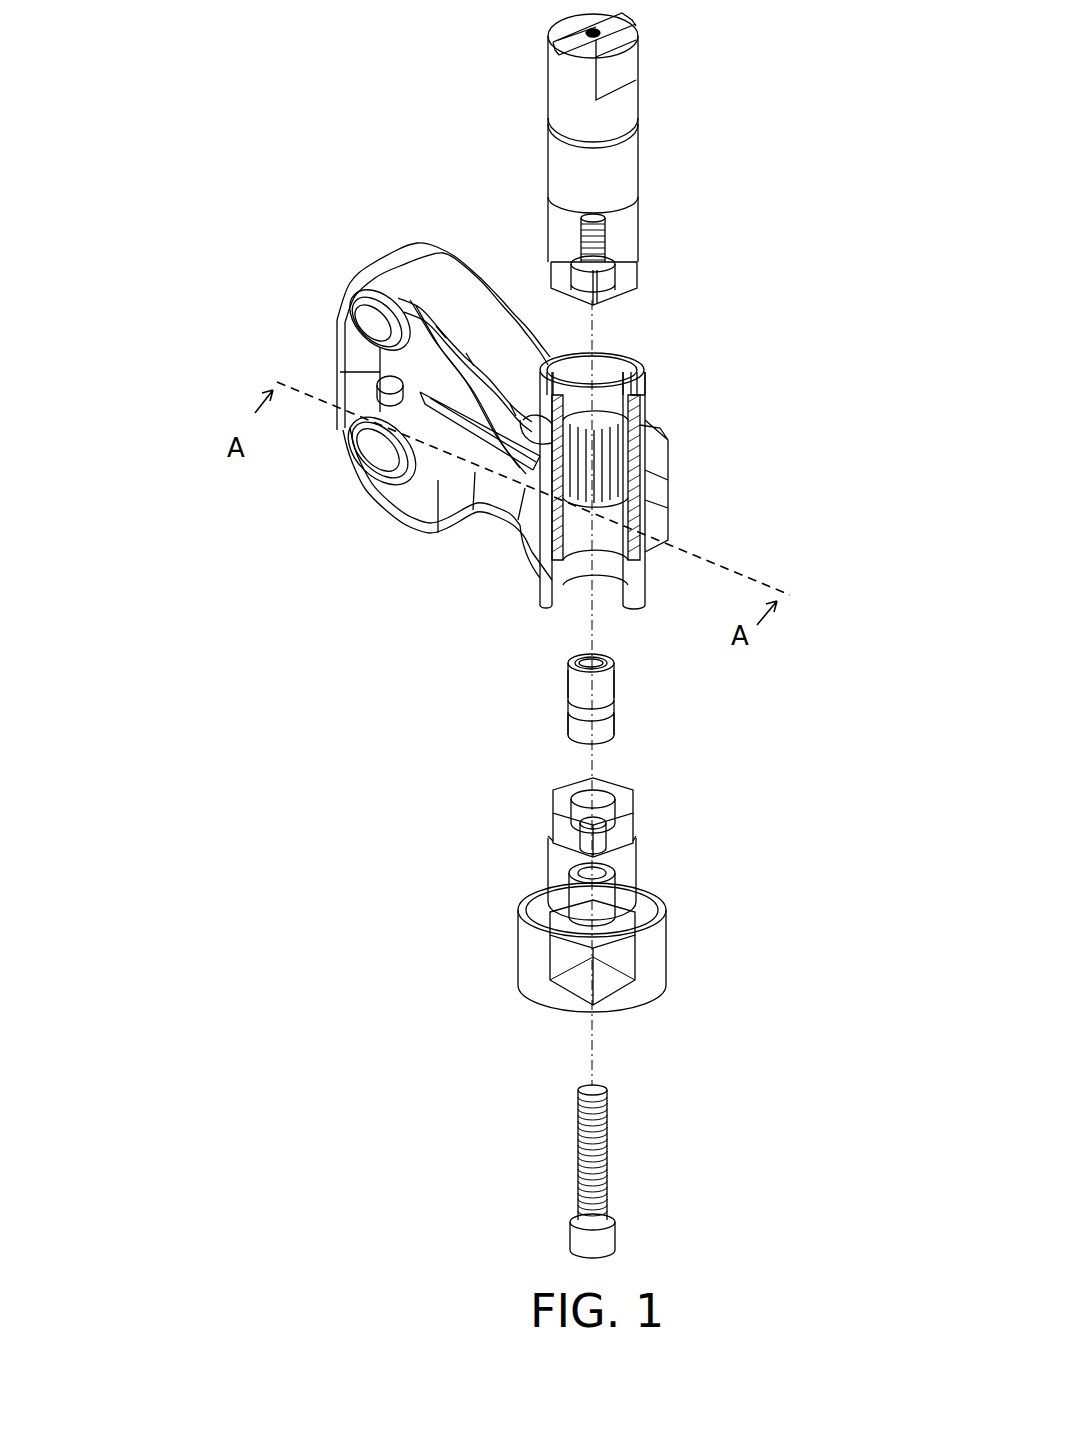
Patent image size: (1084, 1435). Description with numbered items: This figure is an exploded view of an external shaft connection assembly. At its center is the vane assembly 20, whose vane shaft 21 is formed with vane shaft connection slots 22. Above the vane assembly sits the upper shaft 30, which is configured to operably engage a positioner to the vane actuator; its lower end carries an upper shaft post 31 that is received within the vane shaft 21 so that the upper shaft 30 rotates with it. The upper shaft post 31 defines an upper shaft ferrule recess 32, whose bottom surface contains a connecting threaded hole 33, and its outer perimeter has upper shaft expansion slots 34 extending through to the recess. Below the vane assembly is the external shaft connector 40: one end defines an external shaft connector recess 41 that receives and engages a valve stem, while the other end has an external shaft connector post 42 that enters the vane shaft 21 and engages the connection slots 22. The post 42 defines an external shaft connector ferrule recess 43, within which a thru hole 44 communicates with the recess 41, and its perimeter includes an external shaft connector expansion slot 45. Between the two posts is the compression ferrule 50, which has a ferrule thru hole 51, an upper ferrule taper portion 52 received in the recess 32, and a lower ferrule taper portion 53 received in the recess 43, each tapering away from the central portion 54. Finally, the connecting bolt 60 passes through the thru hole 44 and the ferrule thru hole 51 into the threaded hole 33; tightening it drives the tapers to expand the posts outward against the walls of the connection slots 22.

The vane assembly 20 is at (307, 335).
The vane shaft 21 is at (640, 402).
The vane shaft connection slots 22 is at (600, 470).
The upper shaft 30 is at (563, 160).
The upper shaft post 31 is at (557, 276).
The upper shaft ferrule recess 32 is at (616, 296).
The connecting threaded hole 33 is at (608, 243).
The upper shaft expansion slots 34 is at (592, 305).
The external shaft connector 40 is at (555, 867).
The external shaft connector recess 41 is at (578, 990).
The external shaft connector post 42 is at (557, 817).
The external shaft connector ferrule recess 43 is at (603, 797).
The thru hole 44 is at (627, 848).
The external shaft connector expansion slot 45 is at (612, 827).
The compression ferrule 50 is at (511, 678).
The ferrule thru hole 51 is at (605, 660).
The upper ferrule taper portion 52 is at (612, 682).
The lower ferrule taper portion 53 is at (612, 730).
The central portion 54 is at (616, 704).
The connecting bolt 60 is at (588, 1185).